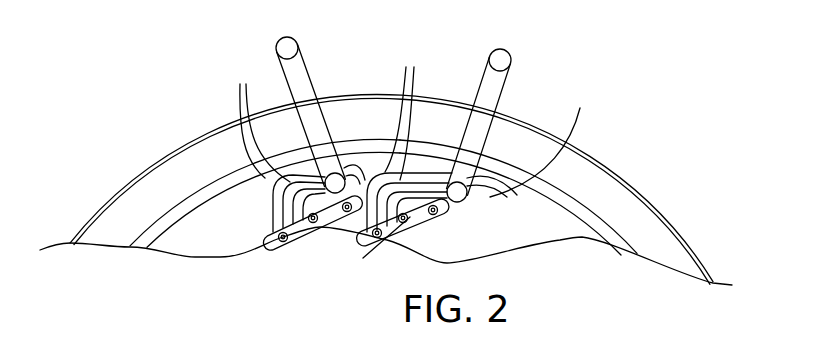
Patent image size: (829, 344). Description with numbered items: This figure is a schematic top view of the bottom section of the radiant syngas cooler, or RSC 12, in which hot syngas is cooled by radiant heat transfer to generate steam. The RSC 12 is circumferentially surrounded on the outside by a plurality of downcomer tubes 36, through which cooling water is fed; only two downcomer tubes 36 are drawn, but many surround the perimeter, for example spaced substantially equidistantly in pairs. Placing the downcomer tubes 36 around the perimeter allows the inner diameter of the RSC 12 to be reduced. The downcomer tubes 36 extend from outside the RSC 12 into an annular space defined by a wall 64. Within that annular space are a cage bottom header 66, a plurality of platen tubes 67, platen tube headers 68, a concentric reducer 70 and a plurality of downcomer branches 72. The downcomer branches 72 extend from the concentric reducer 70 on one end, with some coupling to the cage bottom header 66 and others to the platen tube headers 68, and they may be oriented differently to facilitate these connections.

The radiant syngas cooler 12 is at (190, 124).
The downcomer tubes 36 is at (280, 36).
The wall 64 is at (620, 177).
The cage bottom header 66 is at (218, 196).
The platen tubes 67 is at (312, 225).
The platen tube headers 68 is at (310, 226).
The concentric reducer 70 is at (462, 205).
The downcomer branches 72 is at (414, 137).